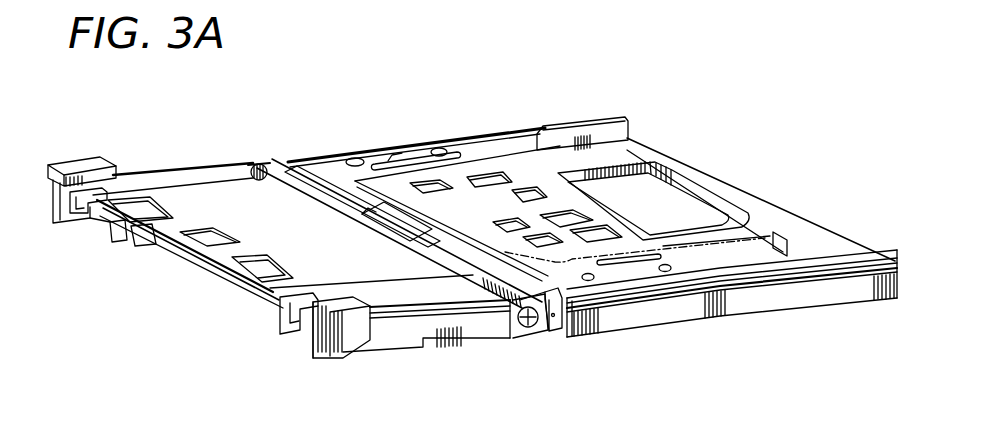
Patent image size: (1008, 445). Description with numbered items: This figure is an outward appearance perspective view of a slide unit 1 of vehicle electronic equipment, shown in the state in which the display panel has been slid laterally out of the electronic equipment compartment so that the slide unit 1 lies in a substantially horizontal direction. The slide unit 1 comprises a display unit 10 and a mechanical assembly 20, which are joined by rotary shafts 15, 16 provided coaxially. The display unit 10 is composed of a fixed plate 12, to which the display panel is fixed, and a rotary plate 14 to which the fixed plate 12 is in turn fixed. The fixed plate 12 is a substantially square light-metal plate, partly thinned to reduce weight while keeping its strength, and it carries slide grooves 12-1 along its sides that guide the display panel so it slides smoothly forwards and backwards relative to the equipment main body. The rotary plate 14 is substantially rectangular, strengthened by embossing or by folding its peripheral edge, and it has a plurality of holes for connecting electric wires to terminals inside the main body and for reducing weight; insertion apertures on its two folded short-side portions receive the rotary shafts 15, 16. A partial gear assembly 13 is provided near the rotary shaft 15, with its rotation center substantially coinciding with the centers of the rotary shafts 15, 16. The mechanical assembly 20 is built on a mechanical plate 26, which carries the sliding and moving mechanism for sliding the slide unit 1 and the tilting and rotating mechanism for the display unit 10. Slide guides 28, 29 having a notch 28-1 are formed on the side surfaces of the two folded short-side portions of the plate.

The slide unit 1 is at (323, 99).
The display unit 10 is at (566, 380).
The fixed plate 12 is at (590, 125).
The slide groove 12-1 is at (875, 265).
The partial gear assembly 13 is at (537, 324).
The rotary plate 14 is at (415, 143).
The rotary shaft 15 is at (532, 327).
The rotary shaft 16 is at (254, 157).
The mechanical assembly 20 is at (516, 383).
The mechanical plate 26 is at (205, 207).
The slide guide 28 is at (320, 347).
The notch 28-1 is at (389, 330).
The slide guide 29 is at (84, 166).